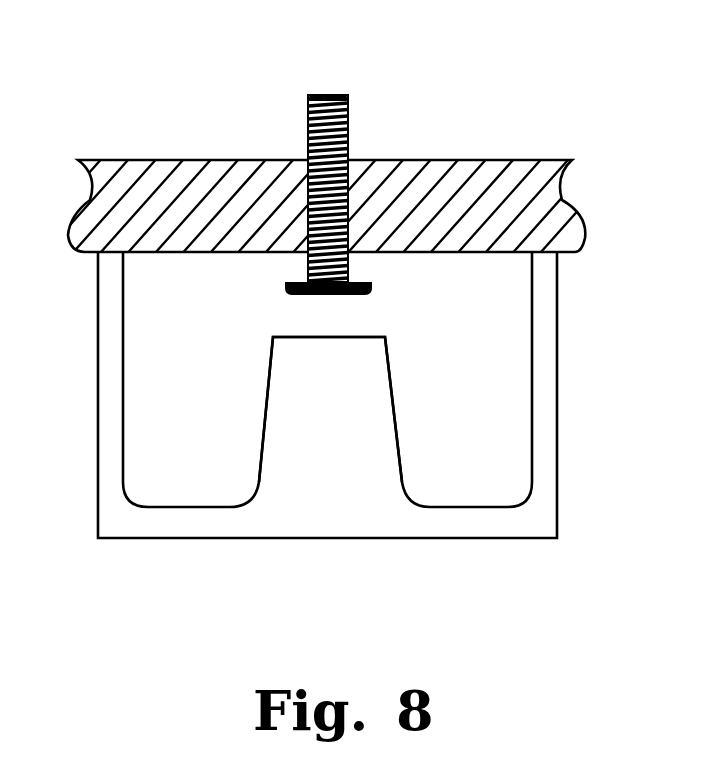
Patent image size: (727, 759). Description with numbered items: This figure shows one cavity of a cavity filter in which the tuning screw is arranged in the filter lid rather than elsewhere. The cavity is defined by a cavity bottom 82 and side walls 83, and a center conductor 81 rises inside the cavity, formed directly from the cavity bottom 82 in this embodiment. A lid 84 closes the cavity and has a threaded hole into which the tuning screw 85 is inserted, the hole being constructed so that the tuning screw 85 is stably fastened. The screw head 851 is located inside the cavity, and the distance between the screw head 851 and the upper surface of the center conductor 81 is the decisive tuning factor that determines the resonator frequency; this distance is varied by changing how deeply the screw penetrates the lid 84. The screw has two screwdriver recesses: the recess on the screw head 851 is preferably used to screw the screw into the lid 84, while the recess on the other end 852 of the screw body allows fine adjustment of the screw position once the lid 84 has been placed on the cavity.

The center conductor 81 is at (266, 413).
The cavity bottom 82 is at (471, 503).
The side walls 83 is at (138, 406).
The lid 84 is at (530, 162).
The tuning screw 85 is at (288, 180).
The screw head 851 is at (328, 298).
The other end of screw body 852 is at (328, 92).